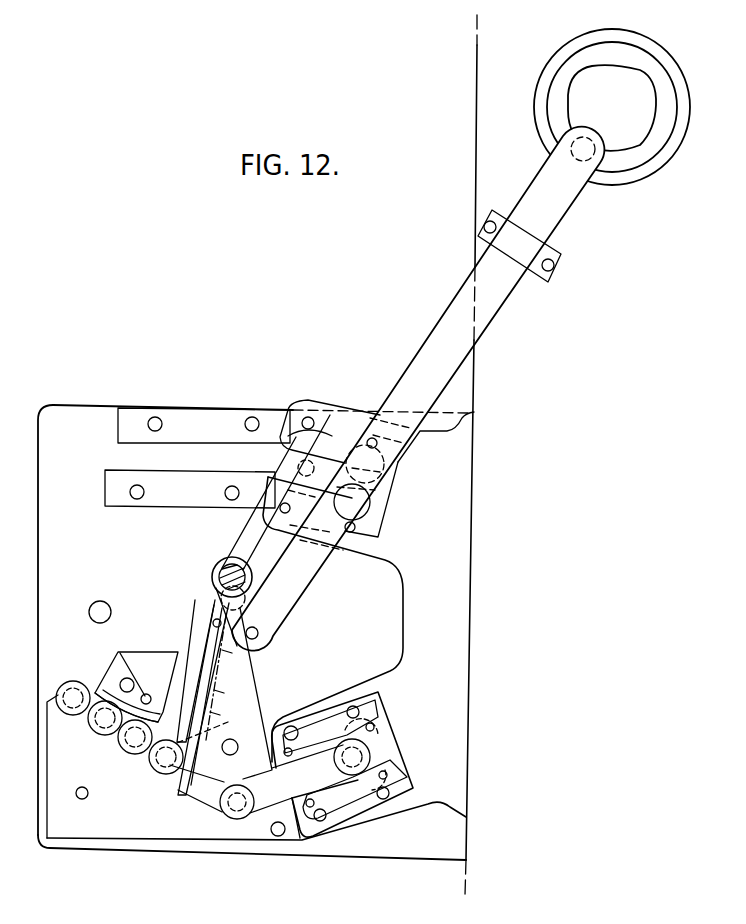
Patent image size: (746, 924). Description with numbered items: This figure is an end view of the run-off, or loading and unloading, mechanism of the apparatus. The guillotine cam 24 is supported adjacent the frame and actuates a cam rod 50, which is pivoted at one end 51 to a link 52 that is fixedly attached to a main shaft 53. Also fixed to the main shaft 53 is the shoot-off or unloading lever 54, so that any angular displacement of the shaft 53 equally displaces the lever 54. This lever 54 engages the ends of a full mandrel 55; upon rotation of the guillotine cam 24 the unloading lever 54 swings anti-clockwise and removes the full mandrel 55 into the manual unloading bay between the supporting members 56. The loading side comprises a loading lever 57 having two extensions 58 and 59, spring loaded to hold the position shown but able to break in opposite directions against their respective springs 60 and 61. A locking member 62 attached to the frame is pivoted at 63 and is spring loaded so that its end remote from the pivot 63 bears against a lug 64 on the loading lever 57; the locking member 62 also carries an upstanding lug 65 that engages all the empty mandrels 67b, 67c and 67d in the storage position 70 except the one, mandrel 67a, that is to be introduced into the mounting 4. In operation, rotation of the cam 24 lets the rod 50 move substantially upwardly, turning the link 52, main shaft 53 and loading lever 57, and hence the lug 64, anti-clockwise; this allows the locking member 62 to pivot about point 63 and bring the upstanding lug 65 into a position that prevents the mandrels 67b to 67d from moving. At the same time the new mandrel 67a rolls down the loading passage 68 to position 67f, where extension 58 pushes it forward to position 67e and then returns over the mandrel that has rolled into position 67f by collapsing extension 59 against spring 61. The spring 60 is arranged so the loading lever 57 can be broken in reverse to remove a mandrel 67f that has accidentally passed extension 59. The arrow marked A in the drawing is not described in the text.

The guillotine cam 24 is at (612, 107).
The cam rod 50 is at (433, 333).
The supporting members 56 is at (200, 497).
The mounting 4 is at (308, 400).
The full mandrel 55 is at (330, 415).
The unloading lever 54 is at (260, 538).
The main shaft 53 is at (222, 570).
The link 52 is at (220, 603).
The lug 64 is at (250, 600).
The pivot end 51 is at (262, 634).
The extension 59 is at (182, 797).
The loading lever 57 is at (213, 643).
The extension 58 is at (230, 702).
The spring 60 is at (226, 680).
The spring 61 is at (214, 724).
The locking member 62 is at (167, 668).
The pivot 63 is at (143, 696).
The upstanding lug 65 is at (98, 688).
The storage position 70 is at (63, 684).
The new mandrel 67a is at (160, 777).
The empty mandrel 67b is at (132, 755).
The empty mandrel 67c is at (103, 736).
The empty mandrel 67d is at (68, 716).
The mandrel position 67e is at (366, 744).
The mandrel position 67f is at (252, 812).
The loading passage 68 is at (198, 787).
The pivot axis A is at (237, 820).